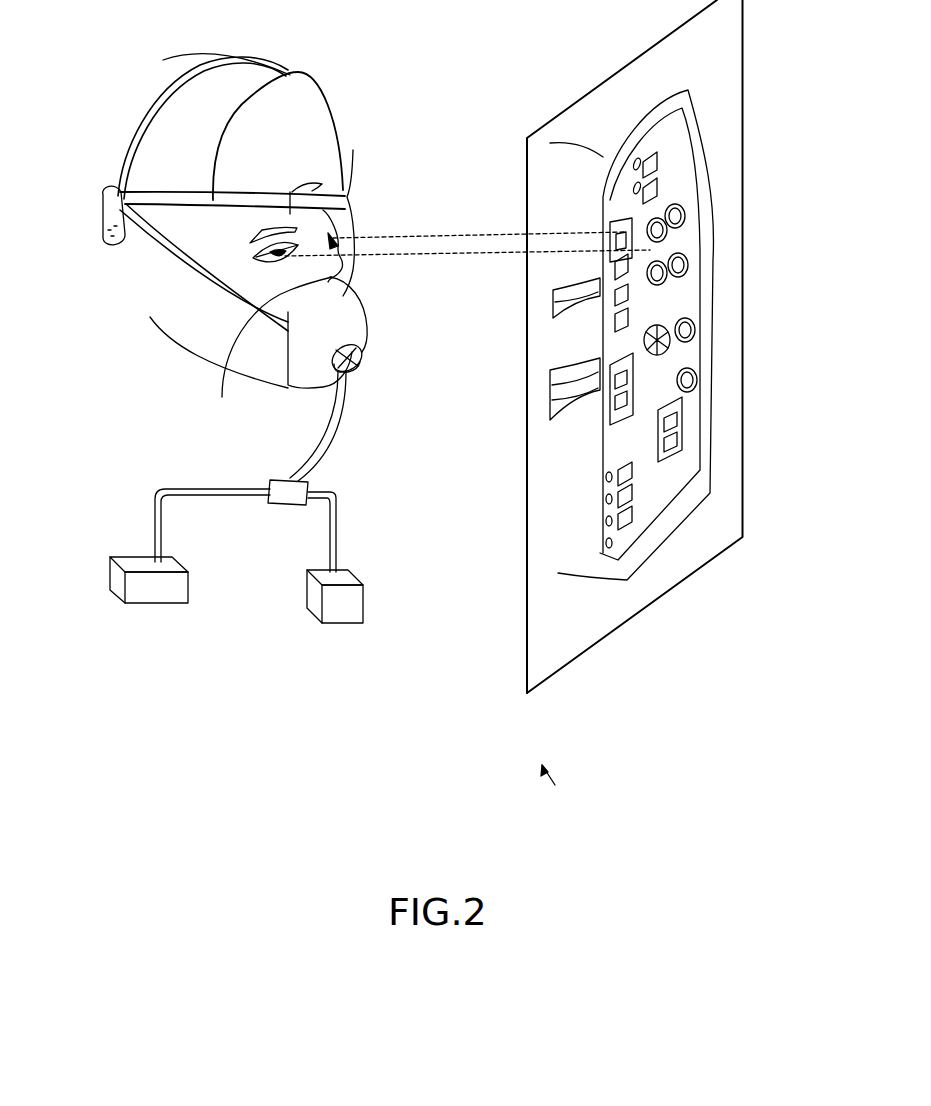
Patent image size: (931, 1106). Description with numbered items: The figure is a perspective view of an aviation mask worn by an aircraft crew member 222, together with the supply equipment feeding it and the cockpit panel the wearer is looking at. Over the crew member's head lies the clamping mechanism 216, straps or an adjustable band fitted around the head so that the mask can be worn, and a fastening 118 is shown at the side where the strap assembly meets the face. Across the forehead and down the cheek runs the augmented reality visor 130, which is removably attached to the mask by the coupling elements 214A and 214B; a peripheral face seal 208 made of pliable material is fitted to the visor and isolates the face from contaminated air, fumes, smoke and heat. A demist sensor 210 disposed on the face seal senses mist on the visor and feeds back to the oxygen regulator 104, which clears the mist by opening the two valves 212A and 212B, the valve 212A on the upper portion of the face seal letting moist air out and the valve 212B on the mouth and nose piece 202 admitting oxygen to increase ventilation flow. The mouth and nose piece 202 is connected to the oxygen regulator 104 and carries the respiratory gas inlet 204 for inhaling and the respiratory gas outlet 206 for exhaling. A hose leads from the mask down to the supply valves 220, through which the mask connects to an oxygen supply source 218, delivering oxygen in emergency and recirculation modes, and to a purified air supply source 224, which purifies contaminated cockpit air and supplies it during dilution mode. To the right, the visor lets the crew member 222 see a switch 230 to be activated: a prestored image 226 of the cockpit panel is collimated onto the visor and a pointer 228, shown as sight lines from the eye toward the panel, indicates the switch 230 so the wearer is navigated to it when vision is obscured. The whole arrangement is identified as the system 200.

The system 200 is at (555, 785).
The mouth and nose piece 202 is at (350, 330).
The respiratory gas inlet 204 is at (337, 417).
The respiratory gas outlet 206 is at (362, 368).
The peripheral face seal 208 is at (290, 75).
The demist sensor 210 is at (290, 193).
The valve 212A is at (364, 213).
The valve 212B is at (266, 348).
The coupling element 214A is at (103, 197).
The coupling element 214B is at (353, 263).
The clamping mechanism 216 is at (170, 83).
The oxygen supply source 218 is at (190, 573).
The supply valves 220 is at (273, 500).
The aircraft crew member 222 is at (175, 352).
The purified air supply source 224 is at (367, 604).
The prestored image 226 is at (603, 197).
The pointer 228 is at (470, 260).
The switch 230 is at (687, 275).
The oxygen regulator 104 is at (363, 352).
The buckle 118 is at (100, 238).
The augmented reality visor 130 is at (175, 252).